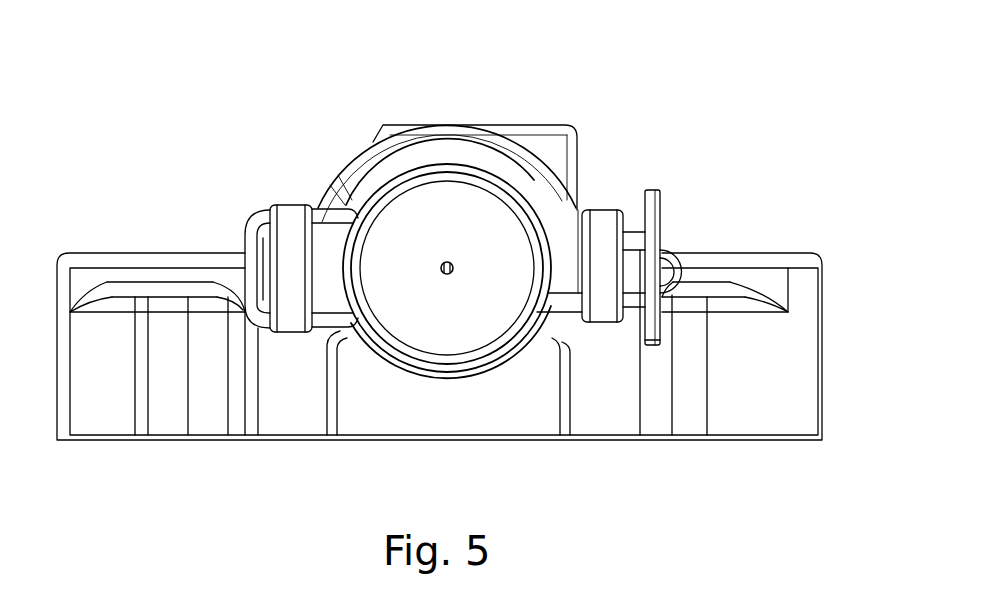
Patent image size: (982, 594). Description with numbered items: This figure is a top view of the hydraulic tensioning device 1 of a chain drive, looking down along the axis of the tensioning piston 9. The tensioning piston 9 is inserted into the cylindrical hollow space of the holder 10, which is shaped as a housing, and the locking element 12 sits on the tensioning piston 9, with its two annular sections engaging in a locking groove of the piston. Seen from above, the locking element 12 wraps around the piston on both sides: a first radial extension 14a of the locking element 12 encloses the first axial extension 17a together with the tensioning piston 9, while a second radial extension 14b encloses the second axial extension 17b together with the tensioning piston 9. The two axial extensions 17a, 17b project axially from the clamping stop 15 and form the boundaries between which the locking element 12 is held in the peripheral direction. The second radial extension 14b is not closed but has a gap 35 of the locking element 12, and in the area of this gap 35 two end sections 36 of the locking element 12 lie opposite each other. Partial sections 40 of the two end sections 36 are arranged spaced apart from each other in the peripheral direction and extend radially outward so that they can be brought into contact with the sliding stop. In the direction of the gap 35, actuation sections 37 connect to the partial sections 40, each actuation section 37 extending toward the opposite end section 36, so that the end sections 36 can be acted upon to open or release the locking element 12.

The hydraulic tensioning device 1 is at (803, 150).
The tensioning piston 9 is at (418, 217).
The holder 10 is at (753, 425).
The locking element 12 is at (380, 357).
The first radial extension 14a is at (262, 265).
The second radial extension 14b is at (660, 225).
The clamping stop 15 is at (473, 153).
The first axial extension 17a is at (293, 220).
The second axial extension 17b is at (598, 237).
The gap 35 is at (652, 350).
The end sections 36 is at (653, 270).
The actuation sections 37 is at (656, 192).
The partial sections 40 is at (567, 230).